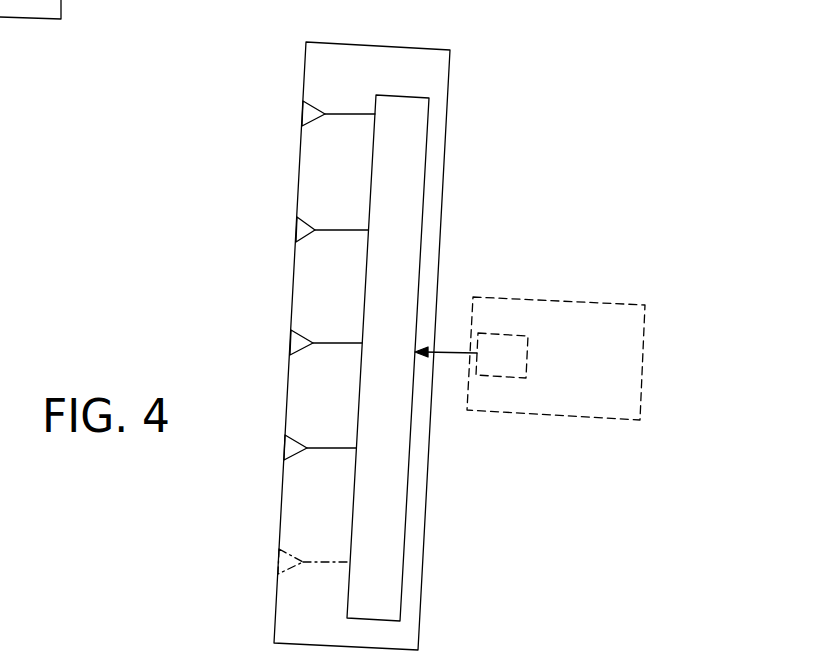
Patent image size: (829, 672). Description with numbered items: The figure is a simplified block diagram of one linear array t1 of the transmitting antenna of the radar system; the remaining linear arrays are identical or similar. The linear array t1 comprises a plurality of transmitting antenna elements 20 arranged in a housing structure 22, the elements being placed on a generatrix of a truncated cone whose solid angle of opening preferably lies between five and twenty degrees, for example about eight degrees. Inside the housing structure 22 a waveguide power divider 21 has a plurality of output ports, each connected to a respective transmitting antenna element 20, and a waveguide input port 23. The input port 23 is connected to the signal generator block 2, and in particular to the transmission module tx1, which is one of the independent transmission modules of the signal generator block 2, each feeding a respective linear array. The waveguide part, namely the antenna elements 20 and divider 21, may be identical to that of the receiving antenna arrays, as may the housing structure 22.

The signal generator block 2 is at (603, 302).
The transmitting antenna elements 20 is at (353, 114).
The waveguide power divider 21 is at (405, 95).
The housing structure 22 is at (275, 598).
The waveguide input port 23 is at (445, 356).
The linear array t1 is at (470, 97).
The transmission module tx1 is at (507, 333).